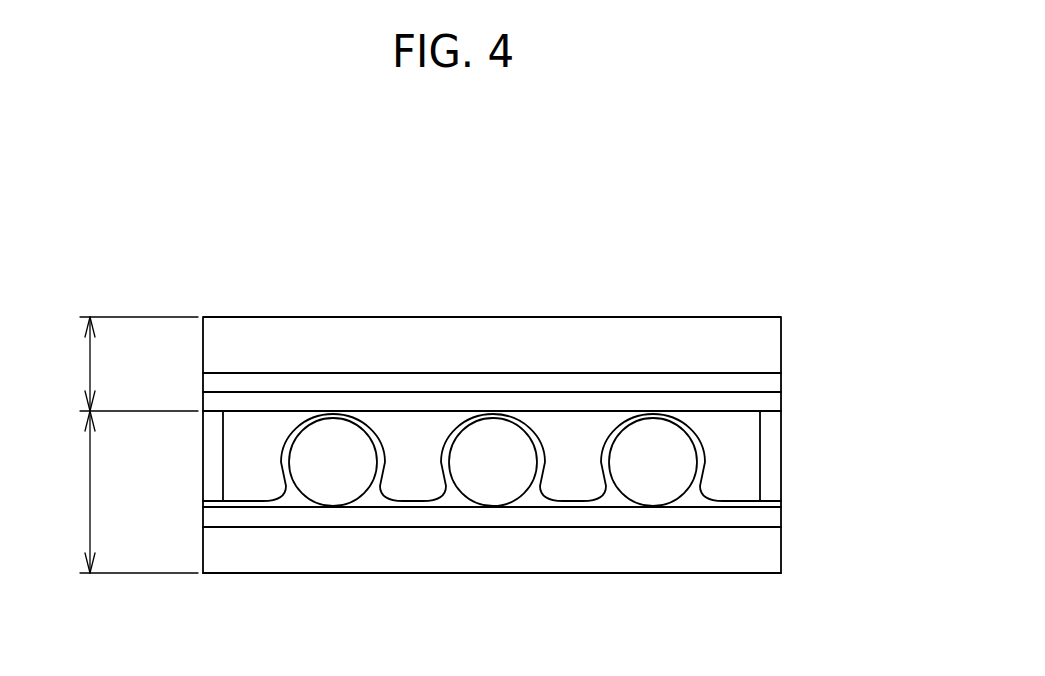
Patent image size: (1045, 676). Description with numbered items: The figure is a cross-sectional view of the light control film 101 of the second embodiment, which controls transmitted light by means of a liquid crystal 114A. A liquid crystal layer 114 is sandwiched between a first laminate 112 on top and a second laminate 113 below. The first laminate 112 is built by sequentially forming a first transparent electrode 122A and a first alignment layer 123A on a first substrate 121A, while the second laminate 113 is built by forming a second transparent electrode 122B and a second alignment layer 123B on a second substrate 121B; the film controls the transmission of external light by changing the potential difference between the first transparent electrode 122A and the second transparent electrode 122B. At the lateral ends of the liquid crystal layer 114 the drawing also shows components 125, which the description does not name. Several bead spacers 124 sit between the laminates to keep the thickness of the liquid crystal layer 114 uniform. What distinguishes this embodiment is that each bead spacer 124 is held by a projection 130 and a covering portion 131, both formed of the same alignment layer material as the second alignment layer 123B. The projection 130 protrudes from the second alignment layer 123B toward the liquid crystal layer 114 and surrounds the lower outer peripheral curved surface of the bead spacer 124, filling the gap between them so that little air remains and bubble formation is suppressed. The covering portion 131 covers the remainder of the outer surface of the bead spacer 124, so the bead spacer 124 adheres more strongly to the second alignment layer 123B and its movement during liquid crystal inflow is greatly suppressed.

The light control film 101 is at (238, 203).
The first laminate 112 is at (120, 364).
The second laminate 113 is at (120, 492).
The liquid crystal layer 114 is at (827, 456).
The liquid crystal 114A is at (748, 472).
The first substrate 121A is at (772, 345).
The first transparent electrode 122A is at (773, 382).
The first alignment layer 123A is at (772, 402).
The second substrate 121B is at (772, 550).
The second transparent electrode 122B is at (772, 518).
The second alignment layer 123B is at (772, 503).
The bead spacer 124 is at (667, 485).
The seal wall 125 is at (212, 453).
The projection 130 is at (295, 487).
The covering portion 131 is at (372, 440).